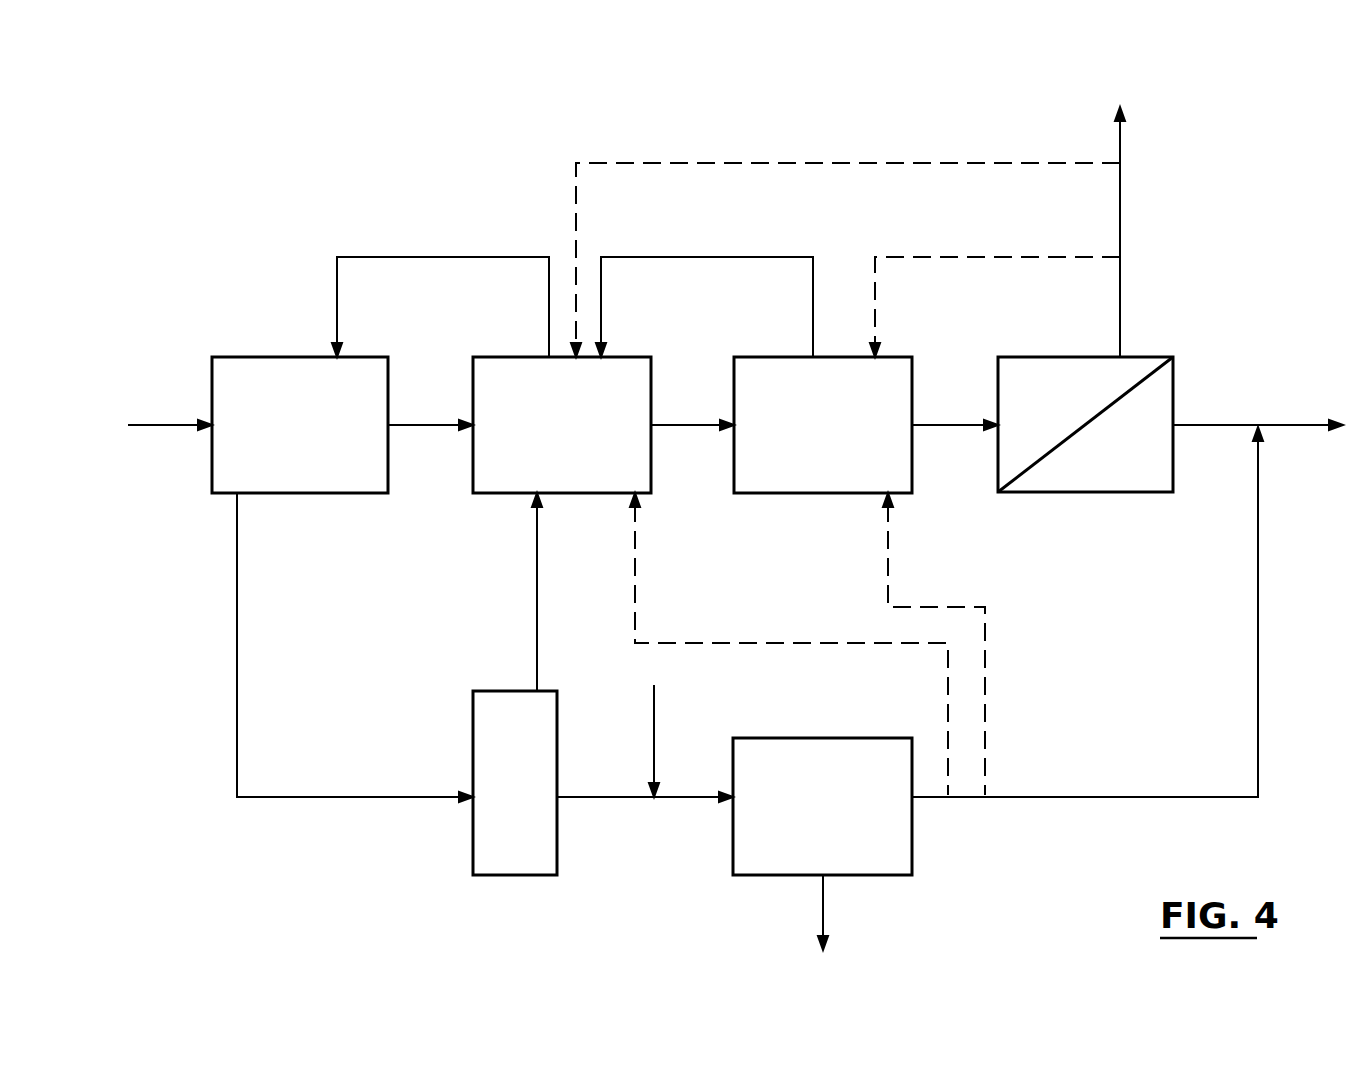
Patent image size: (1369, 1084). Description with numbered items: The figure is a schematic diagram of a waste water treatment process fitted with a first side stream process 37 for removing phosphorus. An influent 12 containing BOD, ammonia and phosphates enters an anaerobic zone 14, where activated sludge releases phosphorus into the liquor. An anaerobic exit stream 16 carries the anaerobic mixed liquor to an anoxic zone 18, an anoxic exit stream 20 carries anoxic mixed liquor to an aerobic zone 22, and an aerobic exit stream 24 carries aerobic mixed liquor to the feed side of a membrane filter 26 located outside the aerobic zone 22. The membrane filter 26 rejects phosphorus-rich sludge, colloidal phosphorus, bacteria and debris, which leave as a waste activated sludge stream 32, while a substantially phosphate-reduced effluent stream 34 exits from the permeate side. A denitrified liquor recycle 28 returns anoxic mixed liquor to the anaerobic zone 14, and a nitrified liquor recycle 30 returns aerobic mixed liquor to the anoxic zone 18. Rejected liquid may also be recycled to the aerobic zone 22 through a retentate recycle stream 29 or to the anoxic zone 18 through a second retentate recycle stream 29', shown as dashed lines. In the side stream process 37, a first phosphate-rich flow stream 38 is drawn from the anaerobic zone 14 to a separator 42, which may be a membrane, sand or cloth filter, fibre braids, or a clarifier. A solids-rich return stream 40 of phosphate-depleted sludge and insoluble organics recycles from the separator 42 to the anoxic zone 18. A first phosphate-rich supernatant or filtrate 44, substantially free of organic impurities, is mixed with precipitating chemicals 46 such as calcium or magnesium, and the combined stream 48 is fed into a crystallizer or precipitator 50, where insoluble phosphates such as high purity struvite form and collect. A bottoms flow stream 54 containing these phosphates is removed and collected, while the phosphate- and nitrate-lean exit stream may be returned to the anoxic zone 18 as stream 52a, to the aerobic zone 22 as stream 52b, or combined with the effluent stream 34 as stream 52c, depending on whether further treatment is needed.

The influent 12 is at (150, 427).
The anaerobic zone 14 is at (298, 495).
The anaerobic exit stream 16 is at (436, 427).
The anoxic zone 18 is at (591, 495).
The anoxic exit stream 20 is at (696, 427).
The aerobic zone 22 is at (821, 495).
The aerobic exit stream 24 is at (953, 427).
The membrane filter 26 is at (1096, 495).
The denitrified liquor recycle 28 is at (440, 257).
The retentate recycle stream 29 is at (995, 269).
The second retentate recycle stream 29' is at (845, 222).
The nitrified liquor recycle 30 is at (712, 257).
The waste activated sludge stream 32 is at (1120, 140).
The effluent stream 34 is at (1238, 424).
The first side stream process 37 is at (216, 819).
The first phosphate-rich flow stream 38 is at (237, 633).
The return stream 40 is at (537, 635).
The separator 42 is at (501, 877).
The first phosphate-rich supernatant or filtrate 44 is at (618, 800).
The precipitating chemicals 46 is at (654, 707).
The combined stream 48 is at (689, 800).
The crystallizer or precipitator 50 is at (771, 877).
The crystallizer or precipitator exit stream to anoxic zone 52a is at (768, 643).
The crystallizer or precipitator exit stream to aerobic zone 52b is at (985, 637).
The crystallizer or precipitator exit stream to effluent 52c is at (1044, 800).
The bottoms flow stream 54 is at (823, 912).